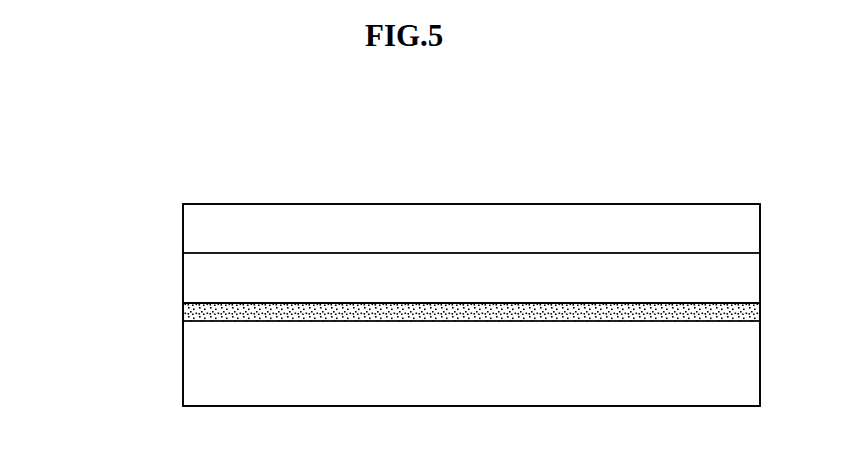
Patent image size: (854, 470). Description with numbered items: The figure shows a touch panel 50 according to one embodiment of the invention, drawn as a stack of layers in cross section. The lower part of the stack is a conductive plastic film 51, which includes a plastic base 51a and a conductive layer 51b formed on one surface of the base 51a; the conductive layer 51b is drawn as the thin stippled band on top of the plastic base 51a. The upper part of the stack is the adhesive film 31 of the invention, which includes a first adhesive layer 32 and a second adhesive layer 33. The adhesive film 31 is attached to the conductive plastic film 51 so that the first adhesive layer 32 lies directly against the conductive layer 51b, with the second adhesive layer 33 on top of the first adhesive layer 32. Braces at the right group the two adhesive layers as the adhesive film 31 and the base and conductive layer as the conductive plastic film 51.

The touch panel 50 is at (518, 141).
The adhesive film 31 is at (768, 205).
The first adhesive layer 32 is at (176, 274).
The second adhesive layer 33 is at (172, 229).
The conductive plastic film 51 is at (768, 303).
The plastic base 51a is at (176, 370).
The conductive layer 51b is at (170, 312).